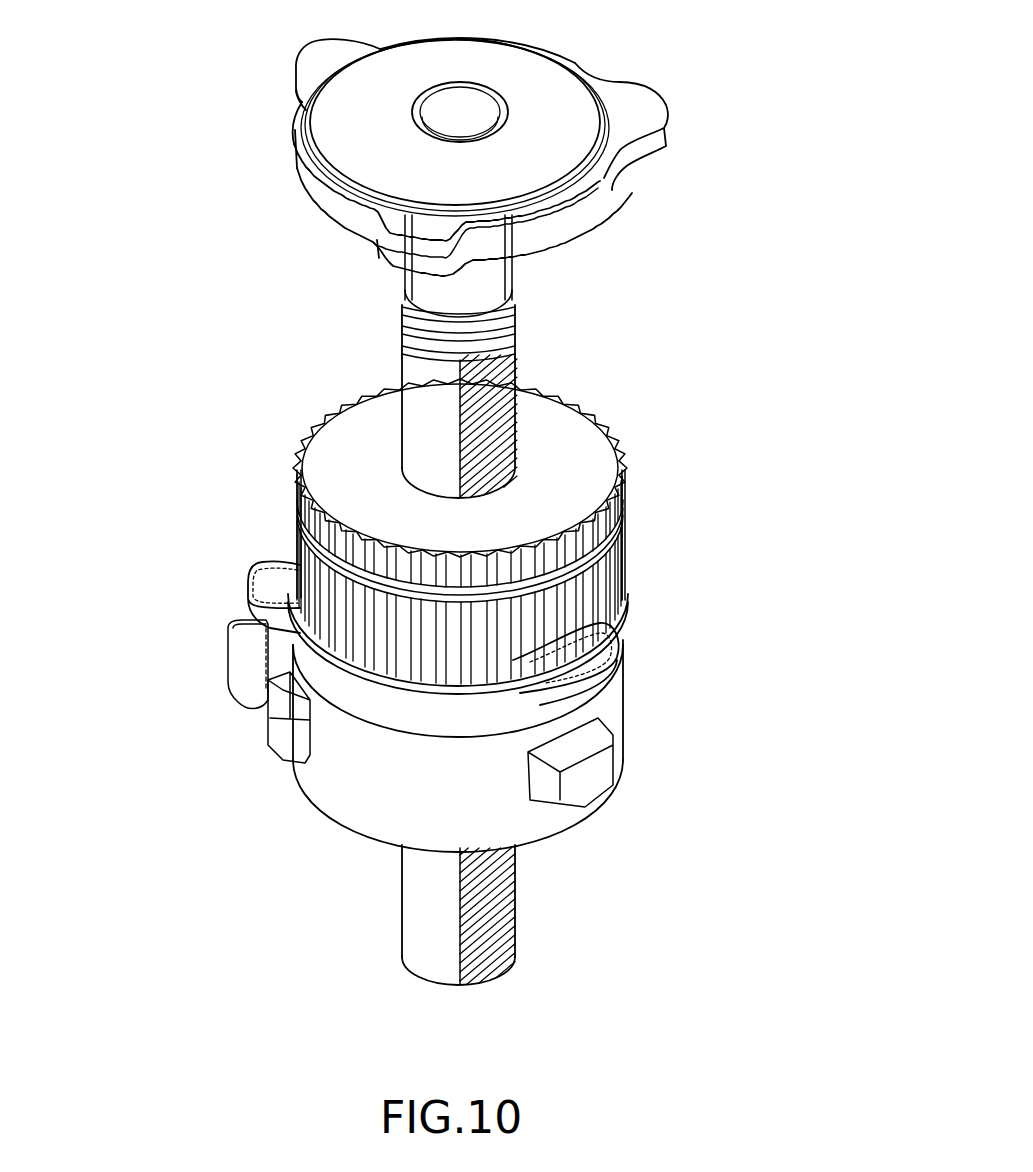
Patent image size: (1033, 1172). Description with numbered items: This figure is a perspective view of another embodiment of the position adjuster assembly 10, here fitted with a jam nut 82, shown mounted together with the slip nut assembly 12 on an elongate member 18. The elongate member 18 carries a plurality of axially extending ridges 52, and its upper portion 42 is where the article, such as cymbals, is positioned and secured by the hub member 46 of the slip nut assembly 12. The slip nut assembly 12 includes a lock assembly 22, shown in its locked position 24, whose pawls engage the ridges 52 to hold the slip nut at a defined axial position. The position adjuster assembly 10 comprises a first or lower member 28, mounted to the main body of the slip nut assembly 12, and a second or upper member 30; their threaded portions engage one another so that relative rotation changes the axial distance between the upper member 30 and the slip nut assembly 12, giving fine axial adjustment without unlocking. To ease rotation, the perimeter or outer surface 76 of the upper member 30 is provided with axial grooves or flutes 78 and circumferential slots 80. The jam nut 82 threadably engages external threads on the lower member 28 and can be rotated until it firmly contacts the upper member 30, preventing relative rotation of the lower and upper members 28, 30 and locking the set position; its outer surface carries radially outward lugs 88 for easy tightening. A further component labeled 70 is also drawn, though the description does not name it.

The position adjuster assembly 10 is at (133, 148).
The slip nut assembly 12 is at (370, 773).
The elongate member 18 is at (455, 916).
The lock assembly 22 is at (192, 712).
The locked position 24 is at (245, 704).
The first or lower member 28 is at (370, 725).
The second or upper member 30 is at (293, 495).
The upper portion 42 is at (490, 355).
The hub member 46 is at (650, 92).
The ridges 52 is at (515, 887).
The gear 70 is at (487, 512).
The perimeter or outer surface 76 is at (330, 410).
The axial grooves or flutes 78 is at (617, 438).
The circumferential slots 80 is at (622, 515).
The jam nut 82 is at (413, 617).
The lugs 88 is at (250, 615).